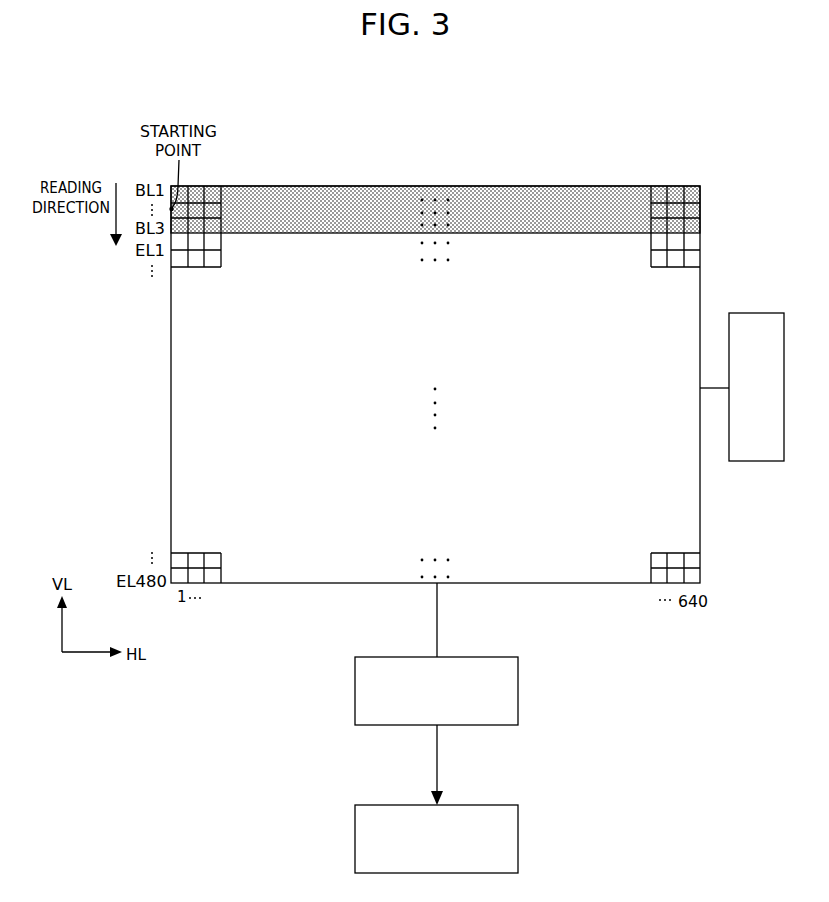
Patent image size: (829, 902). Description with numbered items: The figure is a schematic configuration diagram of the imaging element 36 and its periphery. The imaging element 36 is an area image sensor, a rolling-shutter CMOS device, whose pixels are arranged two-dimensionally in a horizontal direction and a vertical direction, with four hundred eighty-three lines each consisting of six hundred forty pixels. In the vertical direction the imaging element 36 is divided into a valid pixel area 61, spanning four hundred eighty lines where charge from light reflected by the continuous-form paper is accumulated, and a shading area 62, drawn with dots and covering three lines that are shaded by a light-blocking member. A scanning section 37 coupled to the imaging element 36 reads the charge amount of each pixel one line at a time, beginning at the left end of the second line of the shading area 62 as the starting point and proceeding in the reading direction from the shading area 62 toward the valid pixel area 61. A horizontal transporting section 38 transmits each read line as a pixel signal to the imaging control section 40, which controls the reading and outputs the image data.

The imaging element 36 is at (471, 335).
The valid pixel area 61 is at (706, 292).
The shading area 62 is at (706, 208).
The scanning section 37 is at (757, 462).
The horizontal transporting section 38 is at (519, 690).
The imaging control section 40 is at (519, 840).